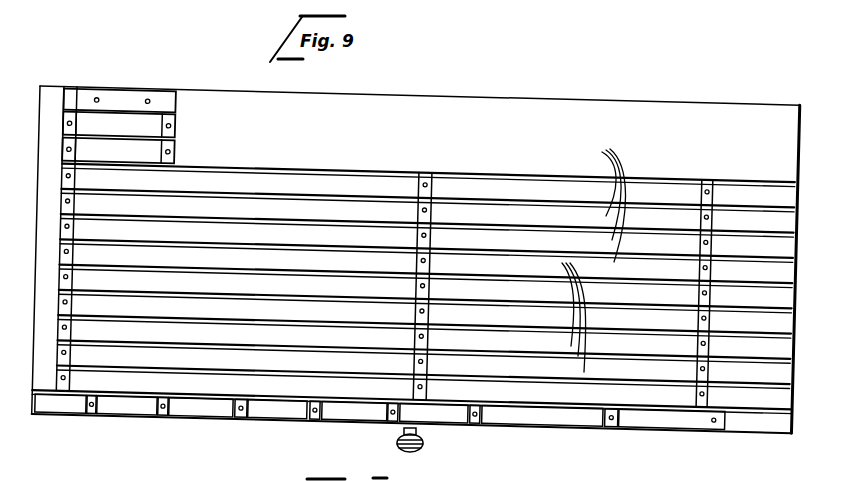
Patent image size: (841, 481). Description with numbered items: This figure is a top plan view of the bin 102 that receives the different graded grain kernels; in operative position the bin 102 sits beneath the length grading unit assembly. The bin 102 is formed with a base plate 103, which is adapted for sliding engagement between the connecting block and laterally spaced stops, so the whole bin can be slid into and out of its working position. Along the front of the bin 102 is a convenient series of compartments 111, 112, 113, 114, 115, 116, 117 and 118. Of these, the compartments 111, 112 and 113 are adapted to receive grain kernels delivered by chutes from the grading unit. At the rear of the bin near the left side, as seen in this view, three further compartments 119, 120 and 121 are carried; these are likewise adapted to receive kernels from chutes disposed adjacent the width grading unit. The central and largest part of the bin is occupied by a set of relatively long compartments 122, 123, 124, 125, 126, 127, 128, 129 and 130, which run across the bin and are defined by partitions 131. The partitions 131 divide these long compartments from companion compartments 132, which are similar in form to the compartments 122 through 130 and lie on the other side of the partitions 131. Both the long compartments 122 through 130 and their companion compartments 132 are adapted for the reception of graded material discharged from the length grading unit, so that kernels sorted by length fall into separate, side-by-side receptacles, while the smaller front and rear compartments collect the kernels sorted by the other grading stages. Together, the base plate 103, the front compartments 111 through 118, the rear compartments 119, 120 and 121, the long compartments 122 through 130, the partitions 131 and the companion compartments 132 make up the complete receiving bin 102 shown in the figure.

The bin 102 is at (705, 131).
The base plate 103 is at (653, 102).
The compartment 111 is at (73, 410).
The compartment 112 is at (127, 410).
The compartment 113 is at (205, 413).
The compartment 114 is at (287, 415).
The compartment 115 is at (358, 417).
The compartment 116 is at (452, 418).
The compartment 117 is at (547, 423).
The compartment 118 is at (650, 420).
The compartment 119 is at (118, 100).
The compartment 120 is at (153, 126).
The compartment 121 is at (152, 150).
The long compartment 122 is at (338, 183).
The long compartment 123 is at (392, 181).
The long compartment 124 is at (358, 208).
The long compartment 125 is at (336, 235).
The long compartment 126 is at (377, 293).
The long compartment 127 is at (348, 312).
The long compartment 128 is at (390, 335).
The long compartment 129 is at (358, 337).
The long compartment 130 is at (312, 390).
The partition 131 is at (440, 175).
The companion compartment 132 is at (571, 251).